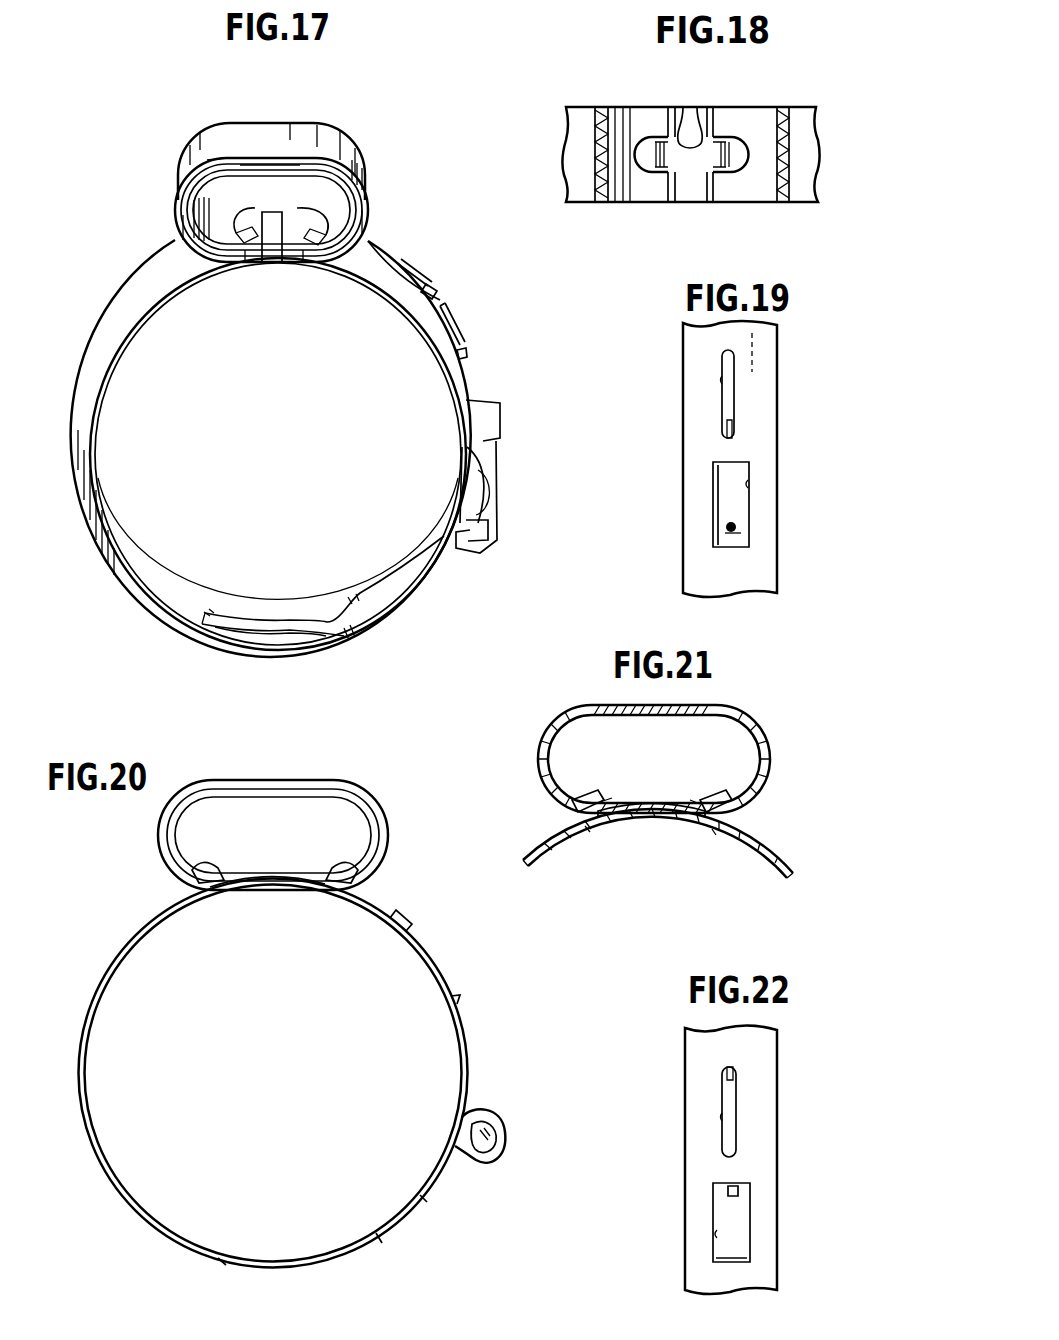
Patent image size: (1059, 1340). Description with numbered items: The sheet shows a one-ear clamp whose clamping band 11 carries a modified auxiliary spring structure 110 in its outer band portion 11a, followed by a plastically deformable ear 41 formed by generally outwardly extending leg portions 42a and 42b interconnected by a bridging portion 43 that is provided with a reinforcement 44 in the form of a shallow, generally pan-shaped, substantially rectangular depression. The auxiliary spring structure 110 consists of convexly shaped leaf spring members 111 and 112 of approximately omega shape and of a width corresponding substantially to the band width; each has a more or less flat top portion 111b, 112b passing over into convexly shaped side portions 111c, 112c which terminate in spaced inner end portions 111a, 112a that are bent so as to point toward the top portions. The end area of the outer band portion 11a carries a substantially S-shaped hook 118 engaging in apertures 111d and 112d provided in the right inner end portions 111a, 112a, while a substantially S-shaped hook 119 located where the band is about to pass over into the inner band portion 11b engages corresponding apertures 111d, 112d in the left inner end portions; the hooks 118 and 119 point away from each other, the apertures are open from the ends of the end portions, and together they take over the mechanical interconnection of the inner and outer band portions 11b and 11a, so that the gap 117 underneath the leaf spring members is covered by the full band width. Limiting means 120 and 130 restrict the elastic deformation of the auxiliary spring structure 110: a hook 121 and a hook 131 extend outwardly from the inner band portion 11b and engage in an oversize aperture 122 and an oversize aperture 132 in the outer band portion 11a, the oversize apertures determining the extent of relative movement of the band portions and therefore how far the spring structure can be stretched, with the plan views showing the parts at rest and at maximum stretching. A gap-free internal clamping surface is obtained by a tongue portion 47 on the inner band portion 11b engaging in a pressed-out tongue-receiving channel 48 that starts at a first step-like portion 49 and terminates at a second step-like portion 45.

In FIG. 17, the clamping band 11 is at (84, 346).
In FIG. 20, the clamping band 11 is at (122, 1197).
In FIG. 21, the outer band portion 11a is at (775, 841).
In FIG. 17, the inner band portion 11b is at (400, 323).
In FIG. 21, the inner band portion 11b is at (750, 850).
In FIG. 17, the ear 41 is at (507, 468).
In FIG. 20, the ear 41 is at (503, 1106).
In FIG. 17, the leg portion 42a is at (487, 410).
In FIG. 17, the leg portion 42b is at (467, 560).
In FIG. 17, the bridging portion 43 is at (493, 488).
In FIG. 17, the reinforcement 44 is at (482, 500).
In FIG. 17, the second step-like portion 45 is at (220, 618).
In FIG. 20, the second step-like portion 45 is at (225, 1265).
In FIG. 17, the tongue portion 47 is at (352, 597).
In FIG. 20, the tongue portion 47 is at (403, 1207).
In FIG. 17, the tongue-receiving channel 48 is at (290, 627).
In FIG. 20, the tongue-receiving channel 48 is at (320, 1268).
In FIG. 17, the first step-like portion 49 is at (367, 637).
In FIG. 20, the first step-like portion 49 is at (380, 1237).
In FIG. 17, the auxiliary spring structure 110 is at (350, 120).
In FIG. 20, the auxiliary spring structure 110 is at (398, 754).
In FIG. 21, the auxiliary spring structure 110 is at (770, 716).
In FIG. 17, the leaf spring member 111 is at (207, 160).
In FIG. 20, the leaf spring member 111 is at (258, 800).
In FIG. 21, the leaf spring member 111 is at (628, 725).
In FIG. 17, the inner end portion 111a is at (256, 266).
In FIG. 18, the inner end portion 111a is at (723, 193).
In FIG. 17, the top portion 111b is at (273, 166).
In FIG. 17, the side portion 111c is at (187, 228).
In FIG. 18, the side portion 111c is at (607, 108).
In FIG. 18, the aperture 111d is at (690, 117).
In FIG. 21, the aperture 111d is at (700, 803).
In FIG. 17, the leaf spring member 112 is at (221, 152).
In FIG. 20, the leaf spring member 112 is at (250, 782).
In FIG. 21, the leaf spring member 112 is at (597, 708).
In FIG. 17, the inner end portion 112a is at (245, 267).
In FIG. 17, the top portion 112b is at (290, 132).
In FIG. 17, the side portion 112c is at (181, 183).
In FIG. 18, the side portion 112c is at (595, 140).
In FIG. 21, the aperture 112d is at (587, 827).
In FIG. 20, the gap 117 is at (257, 877).
In FIG. 21, the gap 117 is at (630, 813).
In FIG. 17, the S-shaped hook 118 is at (343, 225).
In FIG. 18, the S-shaped hook 118 is at (745, 150).
In FIG. 20, the S-shaped hook 118 is at (350, 860).
In FIG. 21, the S-shaped hook 118 is at (730, 787).
In FIG. 17, the S-shaped hook 119 is at (231, 232).
In FIG. 18, the S-shaped hook 119 is at (648, 137).
In FIG. 20, the S-shaped hook 119 is at (207, 867).
In FIG. 21, the S-shaped hook 119 is at (577, 793).
In FIG. 19, the limiting means 120 is at (750, 399).
In FIG. 22, the limiting means 120 is at (752, 1105).
In FIG. 17, the hook 121 is at (423, 290).
In FIG. 19, the hook 121 is at (732, 428).
In FIG. 20, the hook 121 is at (400, 913).
In FIG. 22, the hook 121 is at (735, 1067).
In FIG. 17, the oversize aperture 122 is at (400, 273).
In FIG. 19, the oversize aperture 122 is at (730, 380).
In FIG. 22, the oversize aperture 122 is at (723, 1115).
In FIG. 19, the limiting means 130 is at (760, 509).
In FIG. 22, the limiting means 130 is at (762, 1237).
In FIG. 17, the hook 131 is at (467, 370).
In FIG. 19, the hook 131 is at (737, 530).
In FIG. 20, the hook 131 is at (462, 1002).
In FIG. 22, the hook 131 is at (735, 1190).
In FIG. 17, the oversize aperture 132 is at (463, 340).
In FIG. 19, the oversize aperture 132 is at (748, 483).
In FIG. 22, the oversize aperture 132 is at (720, 1232).